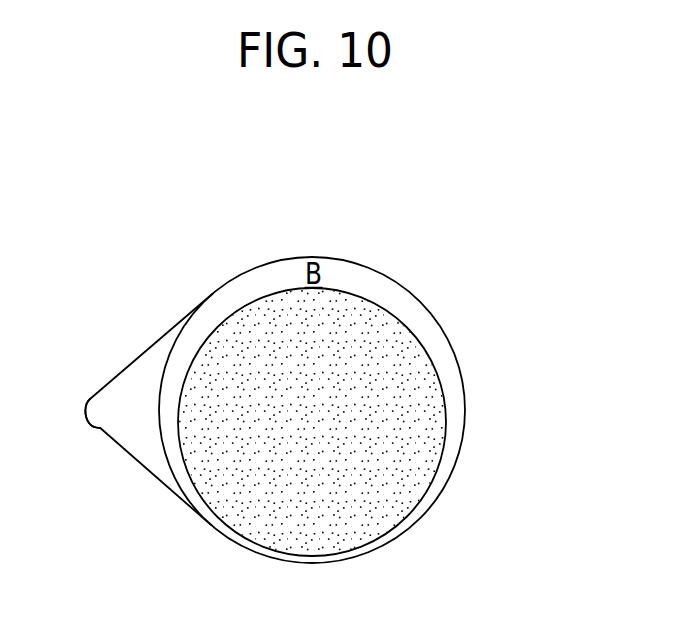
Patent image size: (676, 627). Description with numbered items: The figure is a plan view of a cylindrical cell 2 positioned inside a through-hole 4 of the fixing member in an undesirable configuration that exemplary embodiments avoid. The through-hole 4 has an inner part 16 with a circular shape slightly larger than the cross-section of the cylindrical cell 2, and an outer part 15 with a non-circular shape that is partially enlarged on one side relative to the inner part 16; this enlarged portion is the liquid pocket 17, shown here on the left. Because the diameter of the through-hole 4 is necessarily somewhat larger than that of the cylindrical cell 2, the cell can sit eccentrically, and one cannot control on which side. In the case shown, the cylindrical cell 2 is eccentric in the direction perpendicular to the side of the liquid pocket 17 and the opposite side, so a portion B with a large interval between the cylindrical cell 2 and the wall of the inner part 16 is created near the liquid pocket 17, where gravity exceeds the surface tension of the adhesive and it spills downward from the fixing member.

The cylindrical cell 2 is at (430, 425).
The through-hole 4 is at (455, 272).
The outer part 15 is at (370, 271).
The inner part 16 is at (168, 372).
The liquid pocket 17 is at (133, 437).